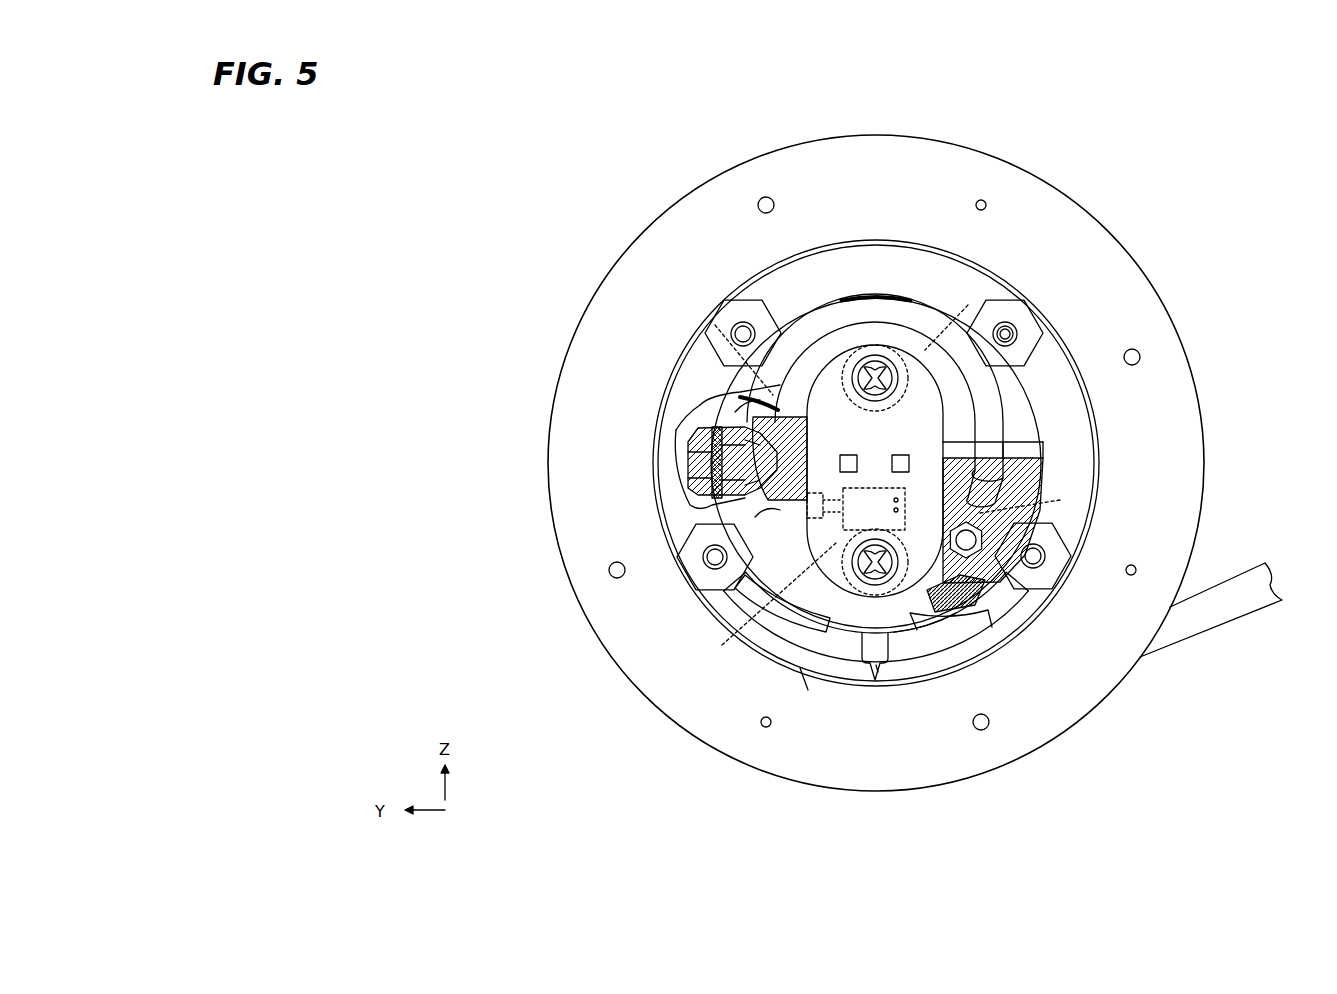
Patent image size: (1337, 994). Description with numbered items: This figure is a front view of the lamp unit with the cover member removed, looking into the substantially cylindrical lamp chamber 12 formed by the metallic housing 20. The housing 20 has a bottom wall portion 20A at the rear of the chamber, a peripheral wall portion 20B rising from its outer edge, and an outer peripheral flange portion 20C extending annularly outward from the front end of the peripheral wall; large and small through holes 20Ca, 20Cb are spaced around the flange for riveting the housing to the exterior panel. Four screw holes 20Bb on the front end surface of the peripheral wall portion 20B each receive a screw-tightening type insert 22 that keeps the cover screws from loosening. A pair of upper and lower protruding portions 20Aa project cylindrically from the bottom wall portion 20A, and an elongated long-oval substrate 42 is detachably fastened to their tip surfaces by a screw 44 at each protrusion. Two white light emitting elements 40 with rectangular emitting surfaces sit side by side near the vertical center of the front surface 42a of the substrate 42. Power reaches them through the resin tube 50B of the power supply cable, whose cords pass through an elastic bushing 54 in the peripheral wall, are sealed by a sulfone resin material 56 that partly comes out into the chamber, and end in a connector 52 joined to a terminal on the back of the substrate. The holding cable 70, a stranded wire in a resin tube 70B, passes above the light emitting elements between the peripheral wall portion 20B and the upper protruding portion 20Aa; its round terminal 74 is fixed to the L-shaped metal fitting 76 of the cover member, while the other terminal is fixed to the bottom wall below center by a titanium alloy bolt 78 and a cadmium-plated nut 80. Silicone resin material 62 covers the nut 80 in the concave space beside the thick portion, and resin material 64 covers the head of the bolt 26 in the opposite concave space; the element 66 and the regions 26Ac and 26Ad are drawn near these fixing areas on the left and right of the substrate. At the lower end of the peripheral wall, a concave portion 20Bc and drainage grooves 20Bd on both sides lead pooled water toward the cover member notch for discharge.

The lamp chamber 12 is at (875, 471).
The housing 20 is at (1145, 262).
The bottom wall portion 20A is at (740, 392).
The protruding portion 20Aa is at (959, 313).
The peripheral wall portion 20B is at (706, 407).
The screw hole 20Bb is at (1005, 328).
The concave portion 20Bc is at (878, 660).
The drainage groove 20Bd is at (803, 668).
The outer peripheral flange portion 20C is at (580, 460).
The through hole 20Ca is at (760, 198).
The through hole 20Cb is at (985, 200).
The insert 22 is at (1015, 330).
The bolt 26 is at (716, 322).
The first slot of mounting plate 26Ac is at (1022, 437).
The second slot of mounting plate 26Ad is at (755, 517).
The light emitting element 40 is at (860, 460).
The substrate 42 is at (946, 413).
The front surface 42a is at (830, 380).
The screw 44 is at (876, 378).
The resin tube 50B is at (855, 625).
The connector 52 is at (798, 616).
The bushing 54 is at (962, 597).
The resin material 56 is at (944, 600).
The resin material 62 is at (1025, 480).
The resin material 64 is at (762, 492).
The electrical connector 66 is at (700, 447).
The holding cable 70 is at (847, 288).
The resin tube 70B is at (880, 296).
The round terminal 74 is at (742, 428).
The L-shaped metal fitting 76 is at (690, 463).
The bolt 78 is at (1000, 575).
The nut 80 is at (985, 515).